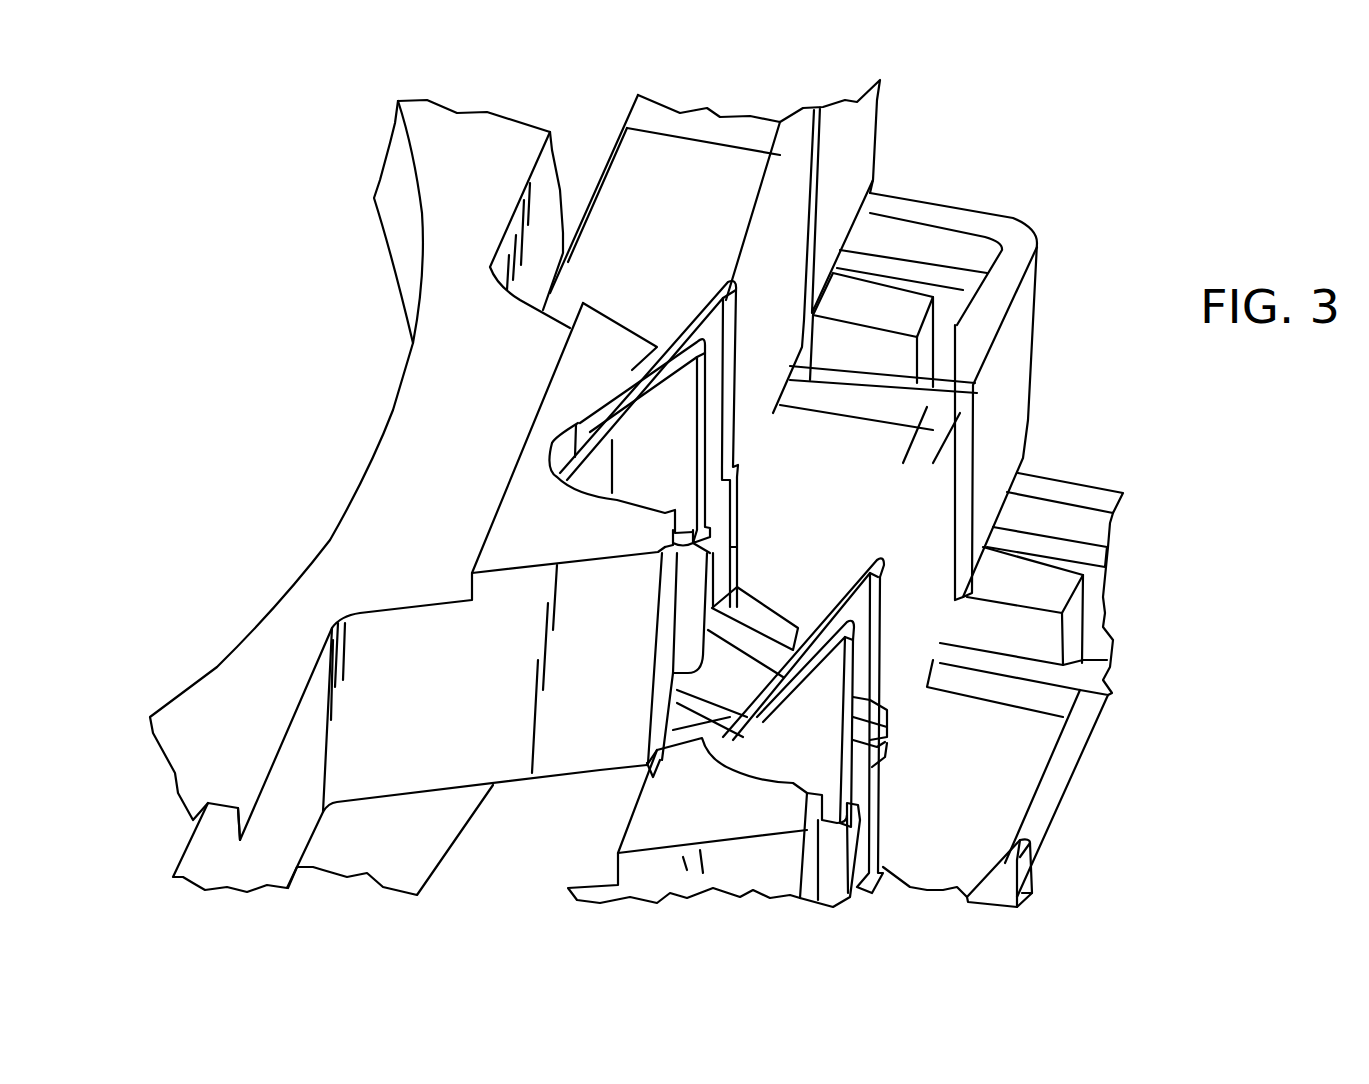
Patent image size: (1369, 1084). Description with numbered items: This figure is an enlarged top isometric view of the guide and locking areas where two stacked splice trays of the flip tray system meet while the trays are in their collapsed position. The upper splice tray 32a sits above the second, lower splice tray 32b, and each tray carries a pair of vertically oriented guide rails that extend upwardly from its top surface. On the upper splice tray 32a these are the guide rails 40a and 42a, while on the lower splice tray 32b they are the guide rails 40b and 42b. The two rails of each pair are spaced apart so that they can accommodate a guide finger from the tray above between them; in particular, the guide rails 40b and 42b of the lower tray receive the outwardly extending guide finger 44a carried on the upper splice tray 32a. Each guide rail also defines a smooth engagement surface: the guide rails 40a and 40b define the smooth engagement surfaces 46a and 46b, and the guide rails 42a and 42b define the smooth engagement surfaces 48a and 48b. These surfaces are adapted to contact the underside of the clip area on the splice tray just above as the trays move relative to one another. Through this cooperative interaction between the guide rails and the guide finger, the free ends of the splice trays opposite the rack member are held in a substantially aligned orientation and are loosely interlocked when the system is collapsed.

The splice tray 32a is at (850, 152).
The splice tray 32b is at (1018, 343).
The guide rail 40a is at (662, 472).
The guide rail 40b is at (798, 748).
The guide rail 42a is at (702, 328).
The guide rail 42b is at (853, 597).
The guide finger 44a is at (742, 684).
The smooth engagement surface 46a is at (583, 420).
The smooth engagement surface 46b is at (780, 680).
The smooth engagement surface 48a is at (632, 370).
The smooth engagement surface 48b is at (733, 598).